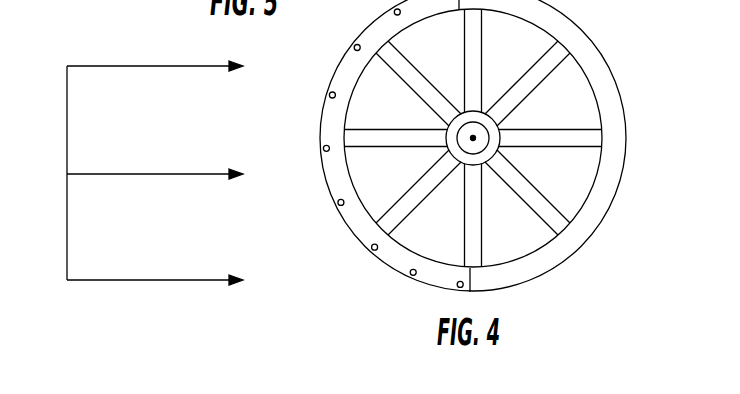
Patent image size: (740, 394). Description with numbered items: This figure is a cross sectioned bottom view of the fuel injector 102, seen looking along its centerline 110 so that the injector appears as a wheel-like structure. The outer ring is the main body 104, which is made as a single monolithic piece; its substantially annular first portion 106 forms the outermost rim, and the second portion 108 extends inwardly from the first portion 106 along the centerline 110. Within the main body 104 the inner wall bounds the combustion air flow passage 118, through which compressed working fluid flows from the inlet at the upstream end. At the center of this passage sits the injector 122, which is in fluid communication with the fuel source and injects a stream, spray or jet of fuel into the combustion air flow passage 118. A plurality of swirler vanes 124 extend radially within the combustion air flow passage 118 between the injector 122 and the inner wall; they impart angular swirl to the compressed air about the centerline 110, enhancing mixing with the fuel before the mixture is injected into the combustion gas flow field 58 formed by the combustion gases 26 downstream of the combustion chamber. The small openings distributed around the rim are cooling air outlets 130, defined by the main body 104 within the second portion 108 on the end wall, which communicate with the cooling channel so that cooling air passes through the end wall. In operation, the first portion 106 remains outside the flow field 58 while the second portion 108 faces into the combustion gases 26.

The combustion gases 26 is at (163, 281).
The combustion gas flow field 58 is at (67, 120).
The fuel injector 102 is at (640, 6).
The main body 104 is at (622, 184).
The first portion 106 is at (615, 119).
The second portion 108 is at (333, 176).
The centerline 110 is at (473, 138).
The combustion air flow passage 118 is at (397, 120).
The injector 122 is at (463, 162).
The swirler vanes 124 is at (482, 36).
The cooling air outlet 130 is at (334, 92).